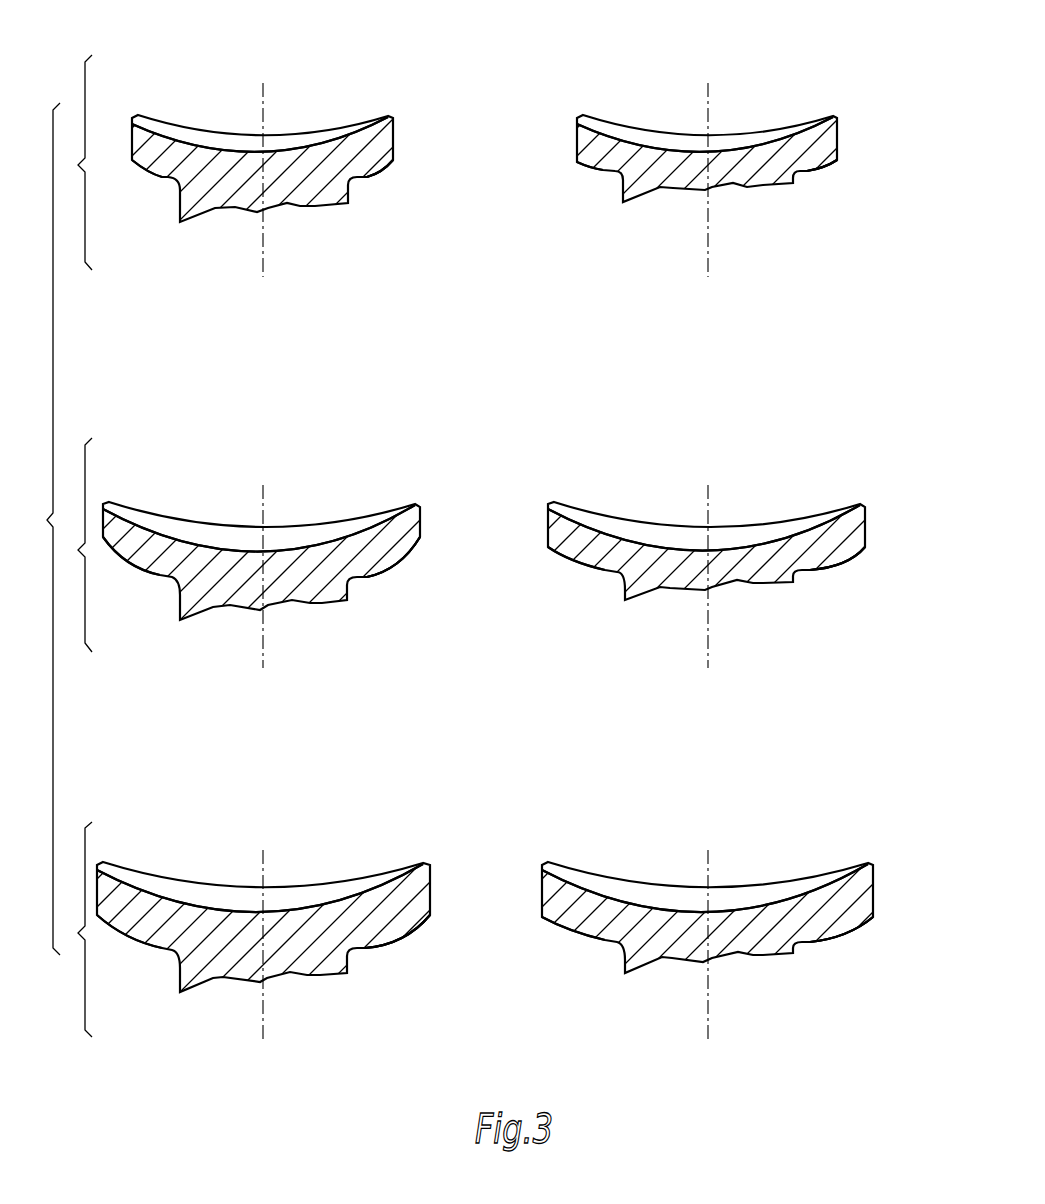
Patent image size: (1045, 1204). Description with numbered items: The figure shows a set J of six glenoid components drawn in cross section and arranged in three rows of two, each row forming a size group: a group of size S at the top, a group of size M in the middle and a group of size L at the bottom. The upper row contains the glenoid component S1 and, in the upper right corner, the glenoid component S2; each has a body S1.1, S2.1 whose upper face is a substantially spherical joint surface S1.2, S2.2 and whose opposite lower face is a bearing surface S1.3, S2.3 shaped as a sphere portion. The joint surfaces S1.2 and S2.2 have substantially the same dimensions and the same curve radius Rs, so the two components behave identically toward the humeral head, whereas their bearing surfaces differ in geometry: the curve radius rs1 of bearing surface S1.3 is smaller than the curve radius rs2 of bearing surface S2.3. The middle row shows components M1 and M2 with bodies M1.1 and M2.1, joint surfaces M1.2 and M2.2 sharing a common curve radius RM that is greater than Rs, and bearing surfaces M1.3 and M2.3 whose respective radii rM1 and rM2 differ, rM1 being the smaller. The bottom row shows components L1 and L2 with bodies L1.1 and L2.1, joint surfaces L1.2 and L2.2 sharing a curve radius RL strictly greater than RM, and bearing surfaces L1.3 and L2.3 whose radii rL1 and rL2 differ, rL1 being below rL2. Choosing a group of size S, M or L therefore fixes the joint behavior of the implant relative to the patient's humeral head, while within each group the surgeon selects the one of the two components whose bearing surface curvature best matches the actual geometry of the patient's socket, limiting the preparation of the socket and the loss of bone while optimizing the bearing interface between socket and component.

The set of glenoid components J is at (43, 529).
The group of size S is at (78, 162).
The group of size M is at (74, 545).
The group of size L is at (77, 929).
The glenoid component S1 is at (402, 115).
The body S1.1 is at (375, 140).
The joint surface S1.2 is at (340, 137).
The bearing surface S1.3 is at (390, 165).
The curve radius of bearing surface S1.3 rs1 is at (377, 175).
The curve radius of joint surfaces of size S Rs is at (195, 138).
The glenoid component S2 is at (738, 126).
The body S2.1 is at (375, 140).
The joint surface S2.2 is at (705, 105).
The bearing surface S2.3 is at (750, 181).
The curve radius of bearing surface S2.3 rs2 is at (824, 175).
The glenoid component M1 is at (423, 505).
The body M1.1 is at (400, 527).
The joint surface M1.2 is at (340, 535).
The bearing surface M1.3 is at (402, 558).
The curve radius of bearing surface M1.3 rM1 is at (383, 568).
The curve radius of joint surfaces of size M RM is at (195, 540).
The glenoid component M2 is at (737, 520).
The body M2.1 is at (400, 527).
The joint surface M2.2 is at (704, 505).
The bearing surface M2.3 is at (746, 569).
The curve radius of bearing surface M2.3 rM2 is at (832, 570).
The glenoid component L1 is at (432, 862).
The body L1.1 is at (408, 898).
The joint surface L1.2 is at (340, 898).
The bearing surface L1.3 is at (413, 930).
The curve radius of bearing surface L1.3 rL1 is at (393, 942).
The curve radius of joint surfaces of size L RL is at (630, 833).
The glenoid component L2 is at (736, 885).
The body L2.1 is at (408, 898).
The joint surface L2.2 is at (705, 867).
The bearing surface L2.3 is at (745, 939).
The curve radius of bearing surface L2.3 rL2 is at (827, 942).